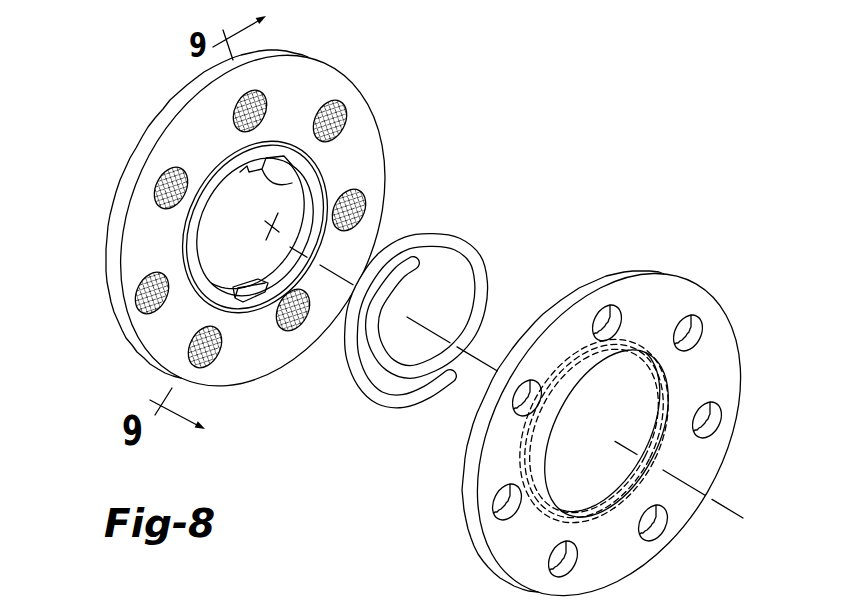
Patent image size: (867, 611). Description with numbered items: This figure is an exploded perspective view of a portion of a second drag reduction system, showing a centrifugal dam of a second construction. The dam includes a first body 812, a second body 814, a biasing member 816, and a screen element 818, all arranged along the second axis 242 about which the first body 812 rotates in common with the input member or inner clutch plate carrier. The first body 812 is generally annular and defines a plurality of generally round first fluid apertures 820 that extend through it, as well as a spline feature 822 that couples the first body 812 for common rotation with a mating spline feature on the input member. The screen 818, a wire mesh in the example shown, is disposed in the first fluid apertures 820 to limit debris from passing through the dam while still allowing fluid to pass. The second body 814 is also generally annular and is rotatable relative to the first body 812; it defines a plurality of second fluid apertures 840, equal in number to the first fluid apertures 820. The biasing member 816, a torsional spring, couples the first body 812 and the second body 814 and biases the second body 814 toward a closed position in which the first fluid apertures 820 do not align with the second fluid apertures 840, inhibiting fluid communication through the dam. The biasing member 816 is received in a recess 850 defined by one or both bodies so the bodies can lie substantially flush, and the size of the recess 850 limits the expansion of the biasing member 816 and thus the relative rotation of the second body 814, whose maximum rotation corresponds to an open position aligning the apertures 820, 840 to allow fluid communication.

The first body 812 is at (265, 221).
The first fluid apertures 820 is at (164, 206).
The screen element 818 is at (360, 206).
The spline feature 822 is at (292, 184).
The recess 850 is at (203, 296).
The biasing member 816 is at (381, 393).
The second body 814 is at (610, 397).
The second fluid apertures 840 is at (692, 335).
The second axis 242 is at (722, 507).